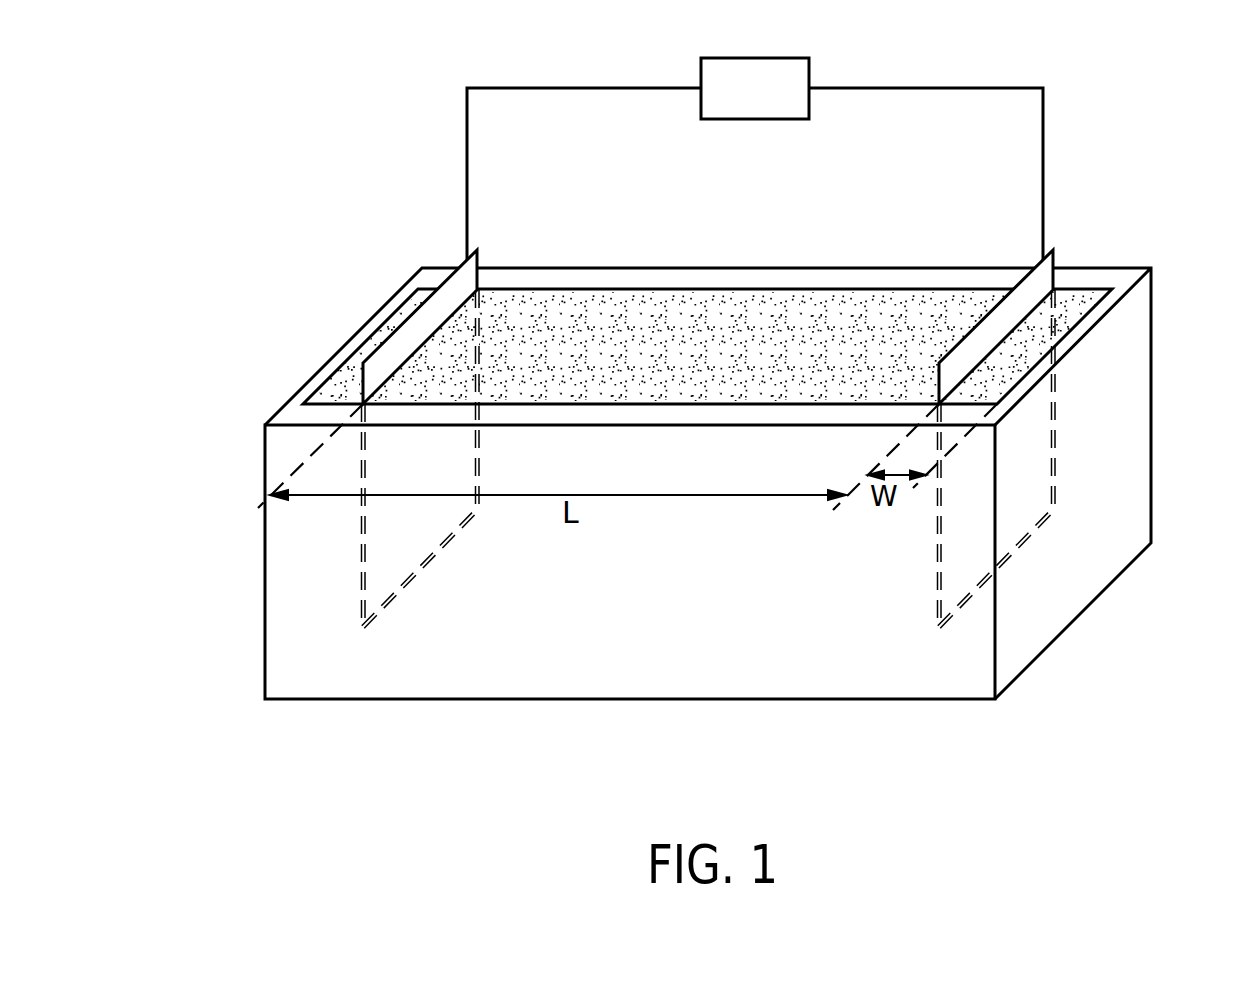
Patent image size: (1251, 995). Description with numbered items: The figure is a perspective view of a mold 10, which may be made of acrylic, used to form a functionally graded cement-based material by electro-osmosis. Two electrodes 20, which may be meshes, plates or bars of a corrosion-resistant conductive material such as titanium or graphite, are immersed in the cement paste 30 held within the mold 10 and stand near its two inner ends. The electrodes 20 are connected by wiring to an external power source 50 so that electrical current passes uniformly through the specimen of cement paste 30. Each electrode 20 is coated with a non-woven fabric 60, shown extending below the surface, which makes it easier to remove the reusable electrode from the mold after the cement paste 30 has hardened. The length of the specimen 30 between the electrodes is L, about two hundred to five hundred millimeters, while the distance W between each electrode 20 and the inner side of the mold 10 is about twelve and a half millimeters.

The mold 10 is at (1130, 398).
The electrodes 20 is at (397, 362).
The cement paste 30 is at (725, 320).
The external power source 50 is at (732, 57).
The non-woven fabric 60 is at (362, 567).